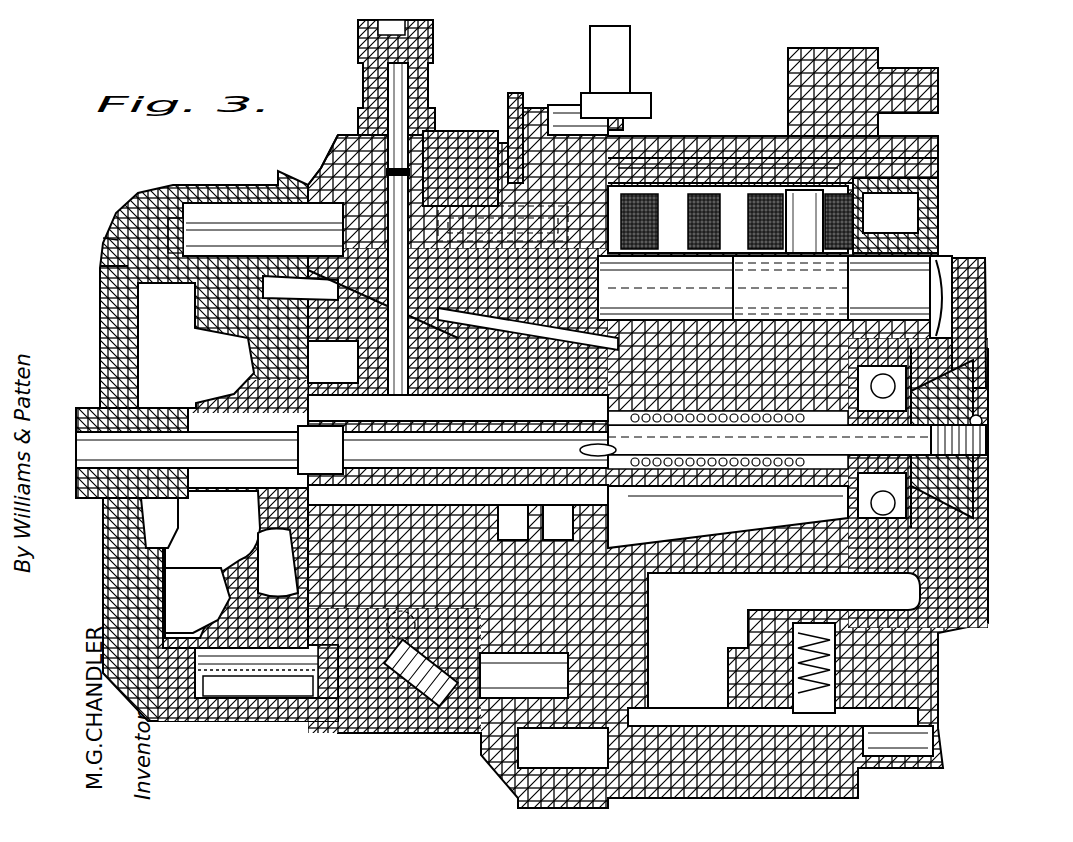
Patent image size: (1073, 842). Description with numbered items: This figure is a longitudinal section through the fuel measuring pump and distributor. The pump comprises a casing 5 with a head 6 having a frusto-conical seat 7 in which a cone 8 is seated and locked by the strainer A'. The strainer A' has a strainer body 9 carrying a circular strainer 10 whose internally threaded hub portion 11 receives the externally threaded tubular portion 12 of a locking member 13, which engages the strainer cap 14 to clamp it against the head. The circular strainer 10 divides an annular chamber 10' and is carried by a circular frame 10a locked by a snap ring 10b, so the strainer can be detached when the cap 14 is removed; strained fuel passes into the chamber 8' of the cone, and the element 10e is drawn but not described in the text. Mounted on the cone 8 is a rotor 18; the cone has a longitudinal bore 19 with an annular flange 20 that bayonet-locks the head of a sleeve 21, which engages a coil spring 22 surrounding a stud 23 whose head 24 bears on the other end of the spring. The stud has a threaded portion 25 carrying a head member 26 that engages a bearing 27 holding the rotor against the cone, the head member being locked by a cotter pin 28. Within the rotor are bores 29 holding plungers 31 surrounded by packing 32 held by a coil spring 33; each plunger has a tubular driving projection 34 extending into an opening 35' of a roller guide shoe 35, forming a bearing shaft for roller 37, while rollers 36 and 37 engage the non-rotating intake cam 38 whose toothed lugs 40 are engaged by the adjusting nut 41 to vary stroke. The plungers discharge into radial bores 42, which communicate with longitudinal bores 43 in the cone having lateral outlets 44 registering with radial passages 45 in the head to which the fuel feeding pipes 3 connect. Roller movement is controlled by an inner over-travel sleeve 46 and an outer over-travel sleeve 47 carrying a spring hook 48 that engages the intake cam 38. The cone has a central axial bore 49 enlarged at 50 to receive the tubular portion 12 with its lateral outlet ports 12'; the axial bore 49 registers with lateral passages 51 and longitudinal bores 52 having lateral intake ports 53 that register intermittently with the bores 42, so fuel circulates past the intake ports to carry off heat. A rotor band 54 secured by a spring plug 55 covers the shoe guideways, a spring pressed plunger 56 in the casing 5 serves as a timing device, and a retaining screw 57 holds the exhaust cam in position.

The fuel feeding pipe 3 is at (355, 30).
The casing 5 is at (660, 148).
The head 6 is at (445, 133).
The frusto-conical seat 7 is at (300, 265).
The cone 8 is at (333, 362).
The chamber of the cone 8' is at (296, 559).
The strainer body 9 is at (215, 595).
The circular strainer 10 is at (220, 634).
The annular chamber 10' is at (162, 663).
The circular frame 10a is at (180, 225).
The snap ring 10b is at (92, 258).
The housing web 10e is at (289, 289).
The hub portion 11 is at (235, 568).
The tubular portion 12 is at (192, 450).
The lateral outlet ports 12' is at (161, 521).
The locking member 13 is at (78, 400).
The strainer cap 14 is at (115, 190).
The rotor 18 is at (648, 548).
The longitudinal bore 19 is at (770, 480).
The annular flange 20 is at (815, 385).
The sleeve 21 is at (845, 485).
The coil spring 22 is at (728, 482).
The stud 23 is at (778, 441).
The head 24 is at (728, 432).
The threaded portion 25 is at (978, 432).
The head member 26 is at (958, 372).
The bearing 27 is at (965, 338).
The cotter pin 28 is at (975, 410).
The bores 29 is at (965, 270).
The plungers 31 is at (900, 297).
The packing 32 is at (665, 288).
The coil spring 33 is at (768, 288).
The driving projections 34 is at (770, 165).
The roller guide shoes 35 is at (889, 216).
The opening 35' is at (805, 175).
The roller 36 is at (722, 216).
The roller 37 is at (880, 208).
The intake cam 38 is at (575, 100).
The toothed lugs 40 is at (490, 125).
The adjusting nut 41 is at (532, 110).
The radial bores 42 is at (528, 325).
The longitudinal bores 43 is at (458, 408).
The lateral outlets 44 is at (403, 340).
The radial passages 45 is at (318, 172).
The inner over-travel sleeve 46 is at (500, 700).
The outer over-travel sleeve 47 is at (925, 170).
The spring hook 48 is at (682, 128).
The central axial bore 49 is at (458, 450).
The enlarged portion 50 is at (320, 450).
The lateral passages 51 is at (575, 442).
The longitudinal bores 52 is at (458, 498).
The lateral intake ports 53 is at (535, 513).
The rotor band 54 is at (712, 160).
The spring plug 55 is at (780, 735).
The spring pressed plunger 56 is at (398, 730).
The retaining screw 57 is at (928, 732).
The strainer A' is at (87, 239).